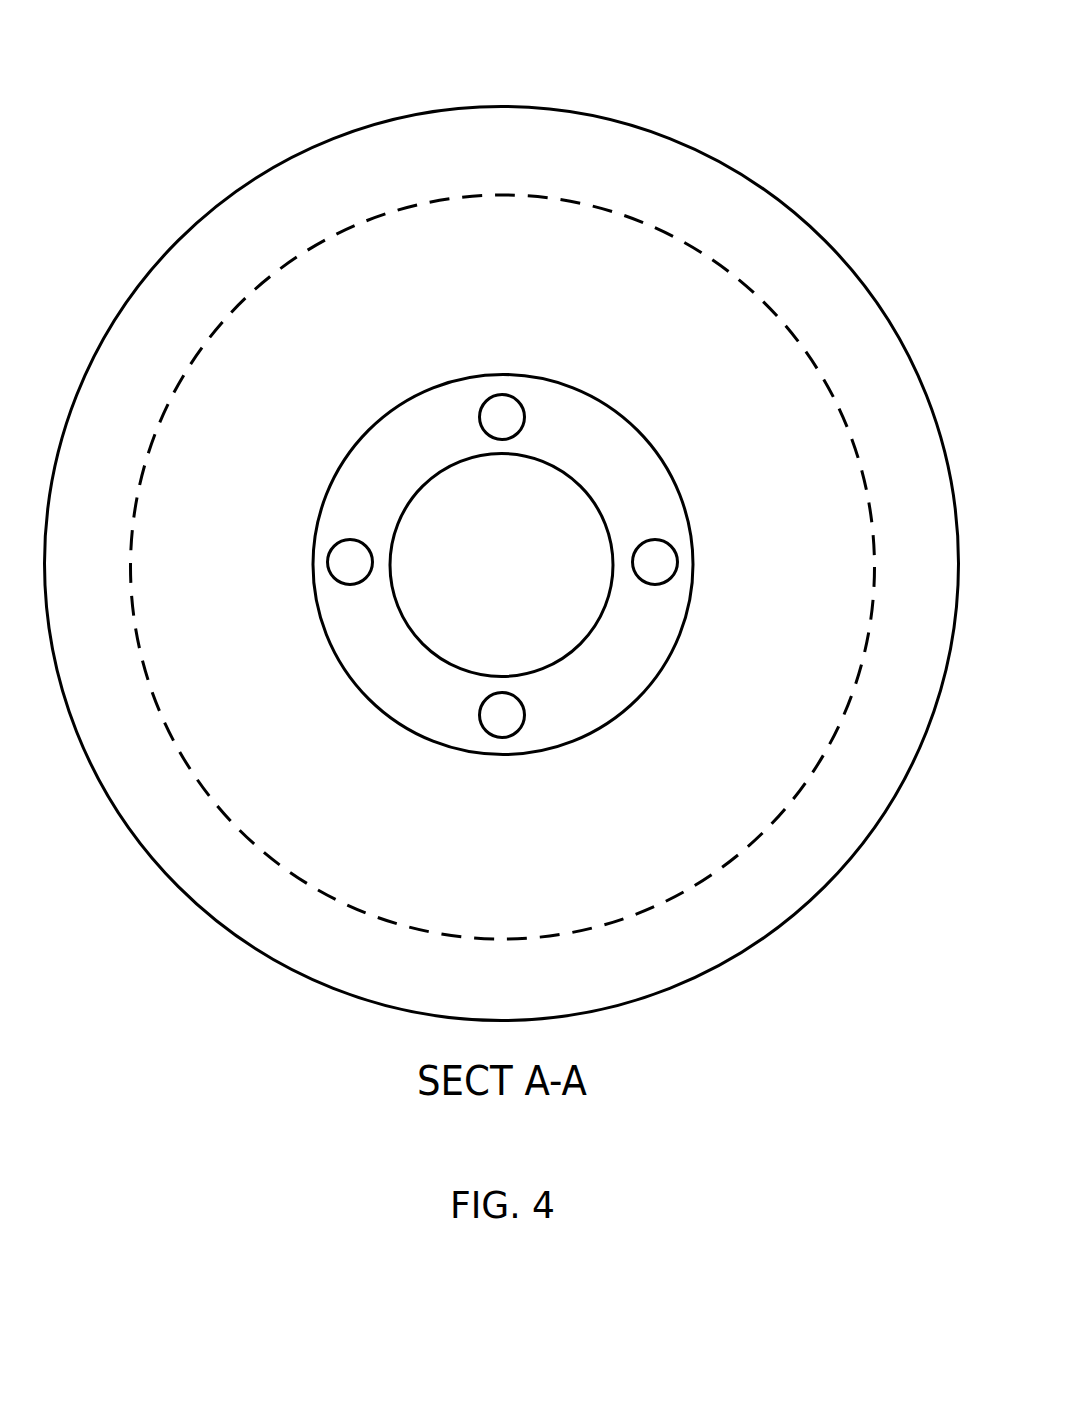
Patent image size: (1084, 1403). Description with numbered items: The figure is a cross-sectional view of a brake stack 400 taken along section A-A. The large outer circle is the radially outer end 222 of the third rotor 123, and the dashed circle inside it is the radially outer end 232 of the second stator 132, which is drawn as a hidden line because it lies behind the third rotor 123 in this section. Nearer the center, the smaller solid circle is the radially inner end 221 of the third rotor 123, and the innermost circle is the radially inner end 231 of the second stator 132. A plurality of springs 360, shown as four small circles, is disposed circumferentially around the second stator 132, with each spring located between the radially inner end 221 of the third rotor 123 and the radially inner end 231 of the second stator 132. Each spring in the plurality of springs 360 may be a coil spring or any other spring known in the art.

The brake stack 400 is at (226, 55).
The third rotor 123 is at (342, 188).
The radially outer end 222 is at (208, 215).
The radially outer end 232 is at (535, 195).
The second stator 132 is at (465, 390).
The radially inner end 221 is at (378, 418).
The radially inner end 231 is at (500, 453).
The plurality of springs 360 is at (501, 402).